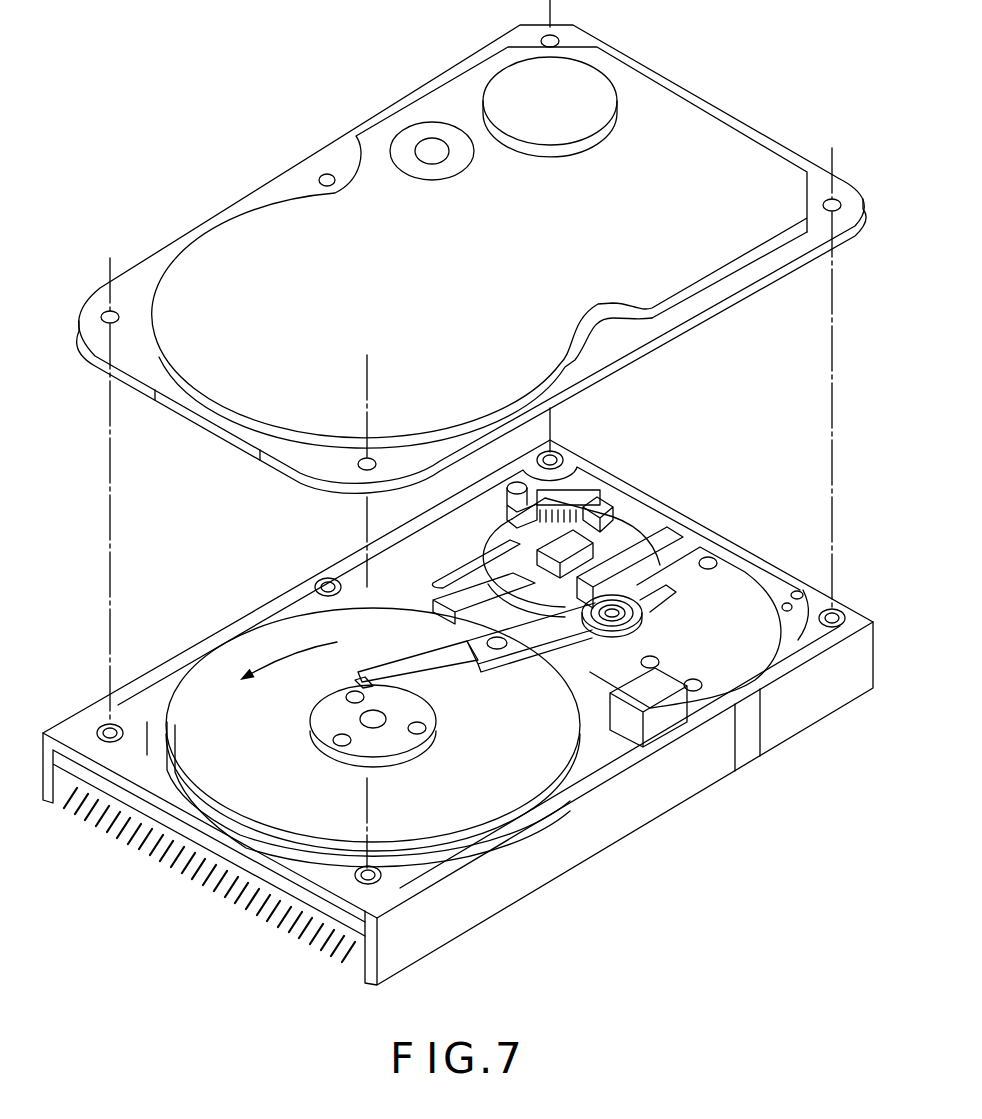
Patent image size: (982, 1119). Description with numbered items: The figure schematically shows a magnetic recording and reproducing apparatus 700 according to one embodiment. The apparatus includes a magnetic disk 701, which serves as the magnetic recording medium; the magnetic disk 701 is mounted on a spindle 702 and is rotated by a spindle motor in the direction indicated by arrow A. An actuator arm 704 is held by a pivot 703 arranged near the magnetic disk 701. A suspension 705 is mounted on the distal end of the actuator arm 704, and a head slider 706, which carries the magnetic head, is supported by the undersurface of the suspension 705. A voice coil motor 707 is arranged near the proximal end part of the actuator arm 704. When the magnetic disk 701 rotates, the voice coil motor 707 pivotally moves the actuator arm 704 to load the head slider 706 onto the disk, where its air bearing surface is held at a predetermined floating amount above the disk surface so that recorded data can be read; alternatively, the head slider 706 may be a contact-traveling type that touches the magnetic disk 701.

The magnetic recording and reproducing apparatus 700 is at (300, 105).
The magnetic disk 701 is at (213, 663).
The spindle 702 is at (318, 717).
The pivot 703 is at (616, 612).
The actuator arm 704 is at (517, 663).
The suspension 705 is at (423, 667).
The head slider 706 is at (382, 686).
The voice coil motor 707 is at (747, 645).